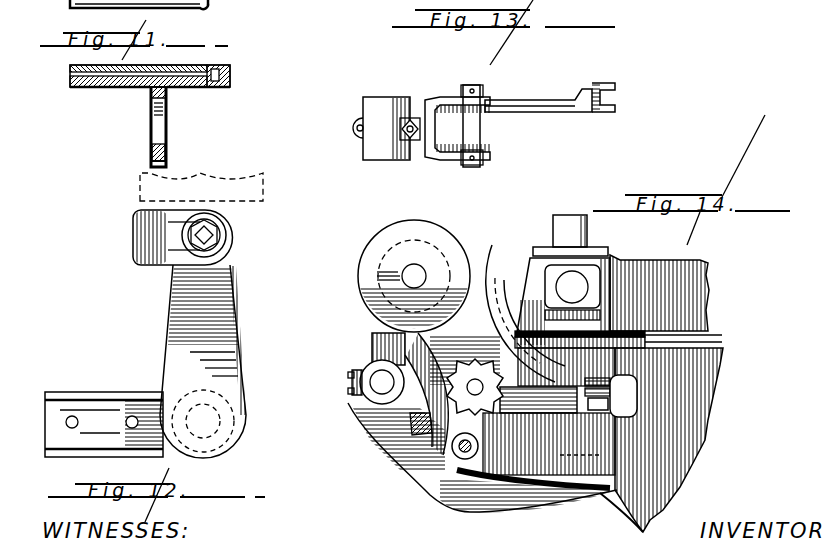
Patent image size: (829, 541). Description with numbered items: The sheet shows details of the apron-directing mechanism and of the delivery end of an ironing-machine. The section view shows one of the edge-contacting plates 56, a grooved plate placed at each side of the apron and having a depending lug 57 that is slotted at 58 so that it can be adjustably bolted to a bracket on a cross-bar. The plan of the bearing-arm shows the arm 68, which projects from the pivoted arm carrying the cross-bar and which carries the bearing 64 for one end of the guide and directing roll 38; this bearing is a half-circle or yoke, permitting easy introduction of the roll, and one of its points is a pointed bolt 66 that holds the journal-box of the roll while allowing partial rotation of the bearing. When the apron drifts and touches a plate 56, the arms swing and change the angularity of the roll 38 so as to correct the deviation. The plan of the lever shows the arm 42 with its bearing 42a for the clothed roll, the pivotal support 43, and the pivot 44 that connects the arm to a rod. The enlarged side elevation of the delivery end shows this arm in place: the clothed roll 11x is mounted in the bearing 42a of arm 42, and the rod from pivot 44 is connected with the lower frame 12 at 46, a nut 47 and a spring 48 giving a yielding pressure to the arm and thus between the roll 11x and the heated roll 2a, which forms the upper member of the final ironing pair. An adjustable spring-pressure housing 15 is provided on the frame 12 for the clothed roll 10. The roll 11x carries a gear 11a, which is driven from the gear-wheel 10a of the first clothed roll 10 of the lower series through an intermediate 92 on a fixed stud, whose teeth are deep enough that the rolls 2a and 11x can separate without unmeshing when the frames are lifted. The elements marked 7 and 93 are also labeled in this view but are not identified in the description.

In FIG. 11, the edge-contacting plate 56 is at (130, 79).
In FIG. 11, the depending lug 57 is at (167, 157).
In FIG. 11, the slot 58 is at (167, 119).
In FIG. 12, the guide and directing roll 38 is at (263, 190).
In FIG. 12, the bearing 64 is at (140, 230).
In FIG. 12, the pointed bolt 66 is at (213, 238).
In FIG. 12, the arm 68 is at (203, 361).
In FIG. 13, the bearing 42a is at (394, 110).
In FIG. 14, the bearing 42a is at (370, 378).
In FIG. 13, the arm 42 is at (538, 91).
In FIG. 14, the arm 42 is at (503, 515).
In FIG. 13, the pivot 43 is at (474, 166).
In FIG. 14, the pivot 43 is at (457, 461).
In FIG. 13, the pivot 44 is at (609, 110).
In FIG. 14, the pivot 44 is at (604, 496).
In FIG. 14, the spring-pressure housing 15 is at (572, 218).
In FIG. 14, the frame 12 is at (655, 268).
In FIG. 14, the frame 7 is at (683, 380).
In FIG. 14, the heated roll 2a is at (414, 276).
In FIG. 14, the clothed roll 10 is at (525, 313).
In FIG. 14, the gear-wheel 10a is at (506, 320).
In FIG. 14, the clothed roll 11x is at (385, 345).
In FIG. 14, the gear 11a is at (415, 424).
In FIG. 14, the intermediate gear 92 is at (492, 412).
In FIG. 14, the shaft 93 is at (552, 467).
In FIG. 14, the spring 48 is at (612, 383).
In FIG. 14, the nut 47 is at (610, 396).
In FIG. 14, the connection point 46 is at (605, 411).